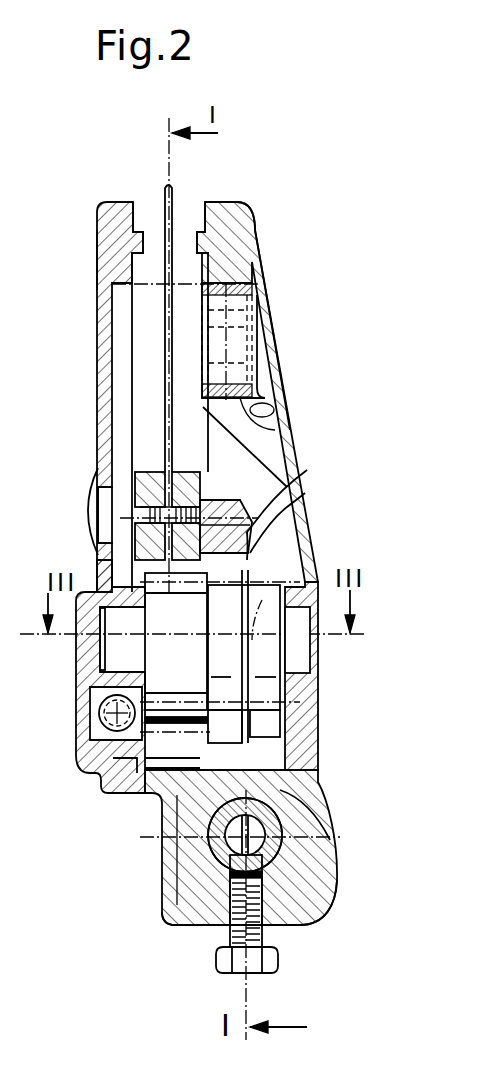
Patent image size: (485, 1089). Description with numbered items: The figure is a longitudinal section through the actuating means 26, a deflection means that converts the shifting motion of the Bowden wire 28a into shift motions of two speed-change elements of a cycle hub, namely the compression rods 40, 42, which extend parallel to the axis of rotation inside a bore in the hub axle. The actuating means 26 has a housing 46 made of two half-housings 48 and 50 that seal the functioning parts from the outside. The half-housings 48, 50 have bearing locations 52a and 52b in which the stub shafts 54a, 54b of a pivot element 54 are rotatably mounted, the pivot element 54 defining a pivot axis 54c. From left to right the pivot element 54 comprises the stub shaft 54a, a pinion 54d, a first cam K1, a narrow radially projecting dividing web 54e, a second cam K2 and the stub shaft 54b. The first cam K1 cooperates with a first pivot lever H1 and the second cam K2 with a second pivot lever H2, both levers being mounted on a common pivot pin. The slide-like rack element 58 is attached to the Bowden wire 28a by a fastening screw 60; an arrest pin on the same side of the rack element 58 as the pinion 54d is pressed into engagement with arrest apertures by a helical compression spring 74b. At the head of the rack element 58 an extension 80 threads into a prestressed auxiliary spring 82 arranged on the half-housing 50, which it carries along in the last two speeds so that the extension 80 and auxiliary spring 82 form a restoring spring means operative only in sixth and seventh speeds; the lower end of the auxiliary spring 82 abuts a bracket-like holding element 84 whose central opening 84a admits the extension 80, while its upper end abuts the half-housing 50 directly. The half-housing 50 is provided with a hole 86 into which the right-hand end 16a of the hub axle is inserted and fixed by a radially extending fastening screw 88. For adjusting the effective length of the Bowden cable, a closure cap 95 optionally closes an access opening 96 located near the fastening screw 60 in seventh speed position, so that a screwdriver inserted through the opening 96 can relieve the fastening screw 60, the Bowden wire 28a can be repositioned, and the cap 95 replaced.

The housing 46 is at (110, 202).
The half-housing 48 is at (98, 235).
The half-housing 50 is at (230, 207).
The actuating means 26 is at (285, 240).
The Bowden wire 28a is at (176, 225).
The extension 80 is at (237, 347).
The auxiliary spring 82 is at (250, 312).
The holding element 84 is at (268, 430).
The central opening 84a is at (273, 411).
The access opening 96 is at (108, 482).
The closure cap 95 is at (90, 510).
The fastening screw 60 is at (140, 472).
The rack element 58 is at (130, 565).
The pivot element 54 is at (266, 576).
The stub shaft 54a is at (120, 647).
The stub shaft 54b is at (300, 650).
The pivot axis 54c is at (315, 550).
The pinion 54d is at (95, 768).
The dividing web 54e is at (283, 508).
The bearing location 52a is at (100, 675).
The bearing location 52b is at (313, 678).
The helical compression spring 74b is at (75, 720).
The first pivot lever H1 is at (148, 793).
The second pivot lever H2 is at (320, 765).
The first cam K1 is at (221, 666).
The second cam K2 is at (265, 666).
The hole 86 is at (342, 790).
The compression rod 42 is at (285, 840).
The compression rod 40 is at (165, 852).
The right-hand end of the hub axle 16a is at (305, 900).
The fastening screw 88 is at (283, 957).